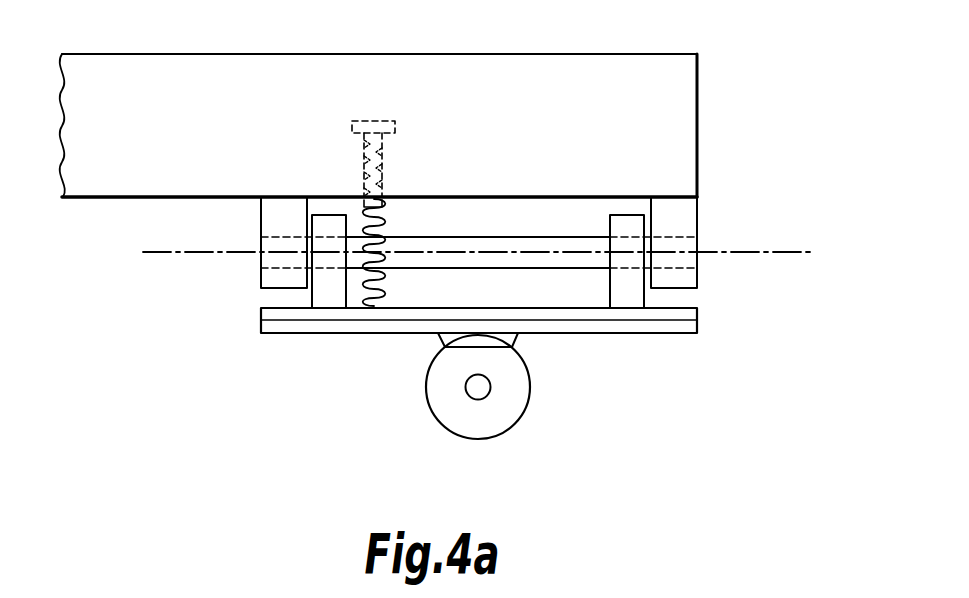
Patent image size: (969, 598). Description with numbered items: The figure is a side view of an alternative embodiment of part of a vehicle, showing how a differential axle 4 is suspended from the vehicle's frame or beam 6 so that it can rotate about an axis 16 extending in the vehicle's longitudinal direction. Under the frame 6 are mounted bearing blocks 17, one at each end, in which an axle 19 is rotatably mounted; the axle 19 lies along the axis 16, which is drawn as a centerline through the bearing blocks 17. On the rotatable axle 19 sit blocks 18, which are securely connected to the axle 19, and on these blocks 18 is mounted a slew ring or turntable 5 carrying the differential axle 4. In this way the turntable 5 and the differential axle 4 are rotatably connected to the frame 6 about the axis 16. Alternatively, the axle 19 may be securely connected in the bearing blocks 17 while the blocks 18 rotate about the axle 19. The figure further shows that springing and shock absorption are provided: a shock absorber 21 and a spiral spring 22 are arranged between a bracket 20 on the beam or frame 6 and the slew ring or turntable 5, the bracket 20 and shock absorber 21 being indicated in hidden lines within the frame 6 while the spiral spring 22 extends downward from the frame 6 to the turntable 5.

The differential axle 4 is at (497, 410).
The slew ring or turntable 5 is at (270, 327).
The frame 6 is at (283, 72).
The axis 16 is at (790, 254).
The bearing blocks 17 is at (275, 214).
The blocks 18 is at (327, 292).
The axle 19 is at (547, 270).
The bracket 20 is at (395, 127).
The shock absorber 21 is at (384, 172).
The spiral spring 22 is at (389, 290).